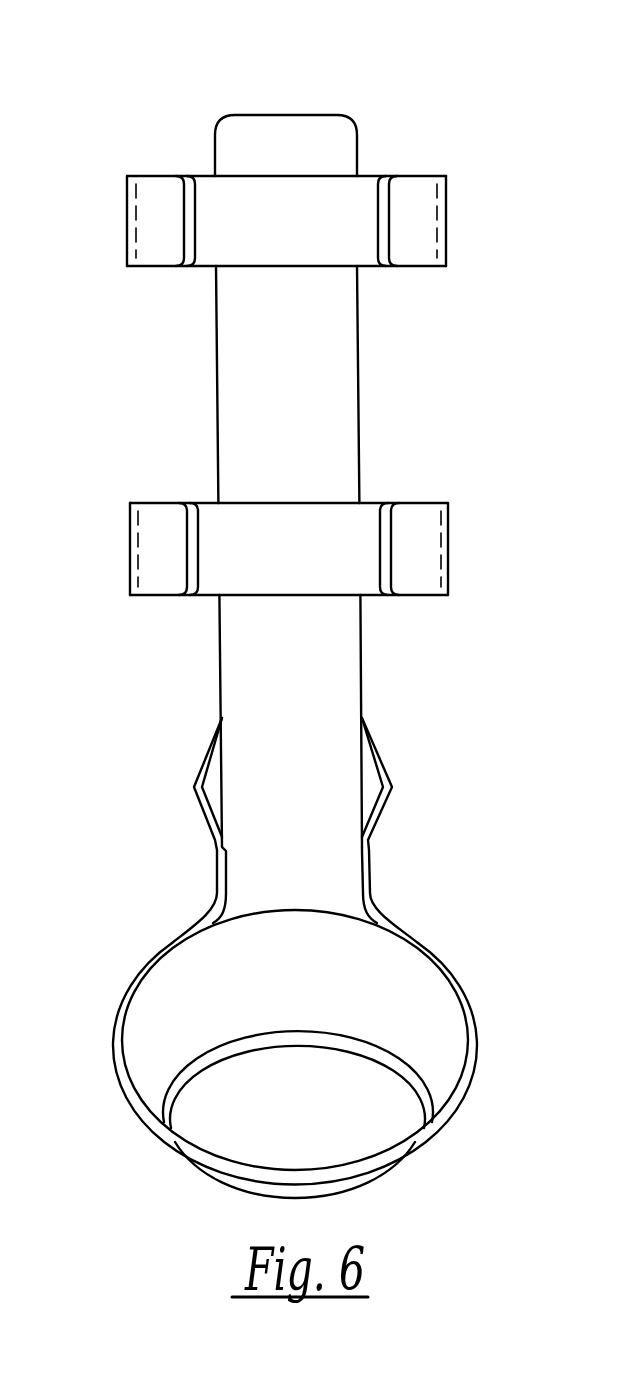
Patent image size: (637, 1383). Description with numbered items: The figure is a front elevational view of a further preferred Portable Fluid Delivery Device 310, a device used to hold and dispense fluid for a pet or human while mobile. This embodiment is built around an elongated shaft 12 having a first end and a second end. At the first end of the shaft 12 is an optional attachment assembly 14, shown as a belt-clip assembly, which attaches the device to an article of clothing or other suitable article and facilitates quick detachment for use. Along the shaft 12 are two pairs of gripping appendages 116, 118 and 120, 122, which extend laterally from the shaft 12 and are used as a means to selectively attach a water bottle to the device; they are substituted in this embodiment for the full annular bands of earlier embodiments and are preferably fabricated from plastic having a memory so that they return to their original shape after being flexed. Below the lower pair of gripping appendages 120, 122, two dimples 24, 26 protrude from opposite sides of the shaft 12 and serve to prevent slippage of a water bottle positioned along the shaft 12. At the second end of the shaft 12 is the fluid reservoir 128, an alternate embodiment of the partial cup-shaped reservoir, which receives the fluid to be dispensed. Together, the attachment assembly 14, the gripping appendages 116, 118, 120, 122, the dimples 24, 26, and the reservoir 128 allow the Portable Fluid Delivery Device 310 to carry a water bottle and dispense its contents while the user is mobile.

The Portable Fluid Delivery Device 310 is at (292, 62).
The attachment assembly 14 is at (347, 123).
The shaft 12 is at (350, 374).
The gripping appendage 116 is at (152, 237).
The gripping appendage 118 is at (420, 236).
The gripping appendage 120 is at (147, 567).
The gripping appendage 122 is at (435, 567).
The dimple 24 is at (200, 786).
The dimple 26 is at (388, 781).
The fluid reservoir 128 is at (445, 1095).